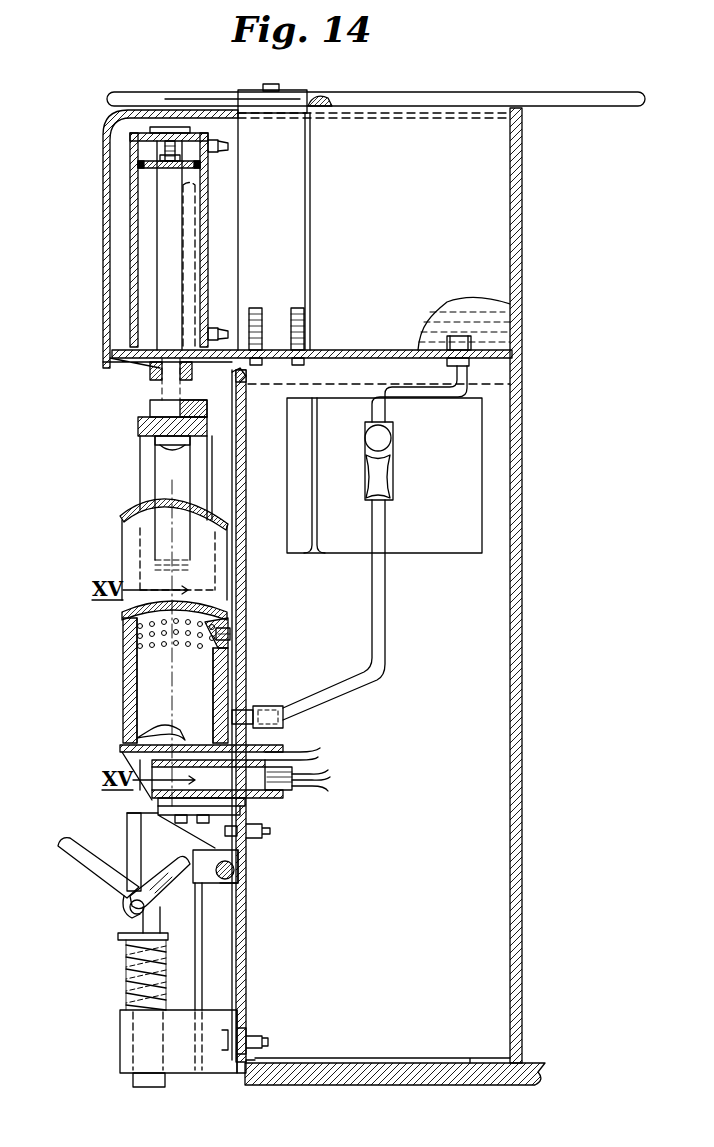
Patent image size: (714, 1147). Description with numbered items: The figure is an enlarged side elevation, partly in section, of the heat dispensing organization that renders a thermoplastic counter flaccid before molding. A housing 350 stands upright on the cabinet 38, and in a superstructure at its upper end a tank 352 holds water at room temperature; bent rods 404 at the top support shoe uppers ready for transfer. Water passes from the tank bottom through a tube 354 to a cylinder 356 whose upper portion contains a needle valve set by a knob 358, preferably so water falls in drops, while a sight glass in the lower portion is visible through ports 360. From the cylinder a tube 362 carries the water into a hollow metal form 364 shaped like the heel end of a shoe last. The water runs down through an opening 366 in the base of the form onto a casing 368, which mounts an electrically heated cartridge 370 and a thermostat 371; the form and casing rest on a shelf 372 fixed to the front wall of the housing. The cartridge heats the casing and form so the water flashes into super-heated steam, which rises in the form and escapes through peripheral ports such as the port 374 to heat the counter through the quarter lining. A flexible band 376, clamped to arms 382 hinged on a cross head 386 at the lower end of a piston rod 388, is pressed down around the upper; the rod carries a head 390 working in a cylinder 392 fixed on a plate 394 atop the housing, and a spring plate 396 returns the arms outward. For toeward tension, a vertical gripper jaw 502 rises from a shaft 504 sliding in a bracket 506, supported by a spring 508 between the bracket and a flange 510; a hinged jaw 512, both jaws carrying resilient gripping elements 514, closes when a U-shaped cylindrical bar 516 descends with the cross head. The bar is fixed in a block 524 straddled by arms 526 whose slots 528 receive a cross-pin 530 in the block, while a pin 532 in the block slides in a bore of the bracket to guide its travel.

The cabinet 38 is at (418, 1080).
The housing 350 is at (522, 575).
The tank 352 is at (510, 209).
The tube 354 is at (465, 375).
The cylinder 356 is at (394, 424).
The knob 358 is at (390, 441).
The ports 360 is at (368, 476).
The tube 362 is at (386, 609).
The hollow metal form 364 is at (123, 663).
The opening 366 is at (160, 738).
The casing 368 is at (292, 800).
The electrically heated cartridge 370 is at (263, 790).
The thermostat 371 is at (262, 752).
The shelf 372 is at (246, 851).
The port 374 is at (142, 616).
The band 376 is at (128, 514).
The arms 382 is at (140, 472).
The cross head 386 is at (138, 426).
The piston rod 388 is at (160, 381).
The head 390 is at (150, 164).
The cylinder 392 is at (130, 217).
The plate 394 is at (120, 352).
The spring plate 396 is at (160, 461).
The bent rods 404 is at (136, 99).
The vertical gripper jaw 502 is at (141, 828).
The shaft 504 is at (150, 1087).
The bracket 506 is at (120, 1040).
The spring 508 is at (124, 981).
The flange 510 is at (118, 937).
The jaw 512 is at (75, 878).
The gripping elements 514 is at (127, 830).
The U-shaped cylindrical bar 516 is at (235, 876).
The block 524 is at (243, 893).
The arms 526 is at (152, 883).
The slots 528 is at (165, 897).
The cross-pin 530 is at (203, 884).
The pin 532 is at (200, 940).